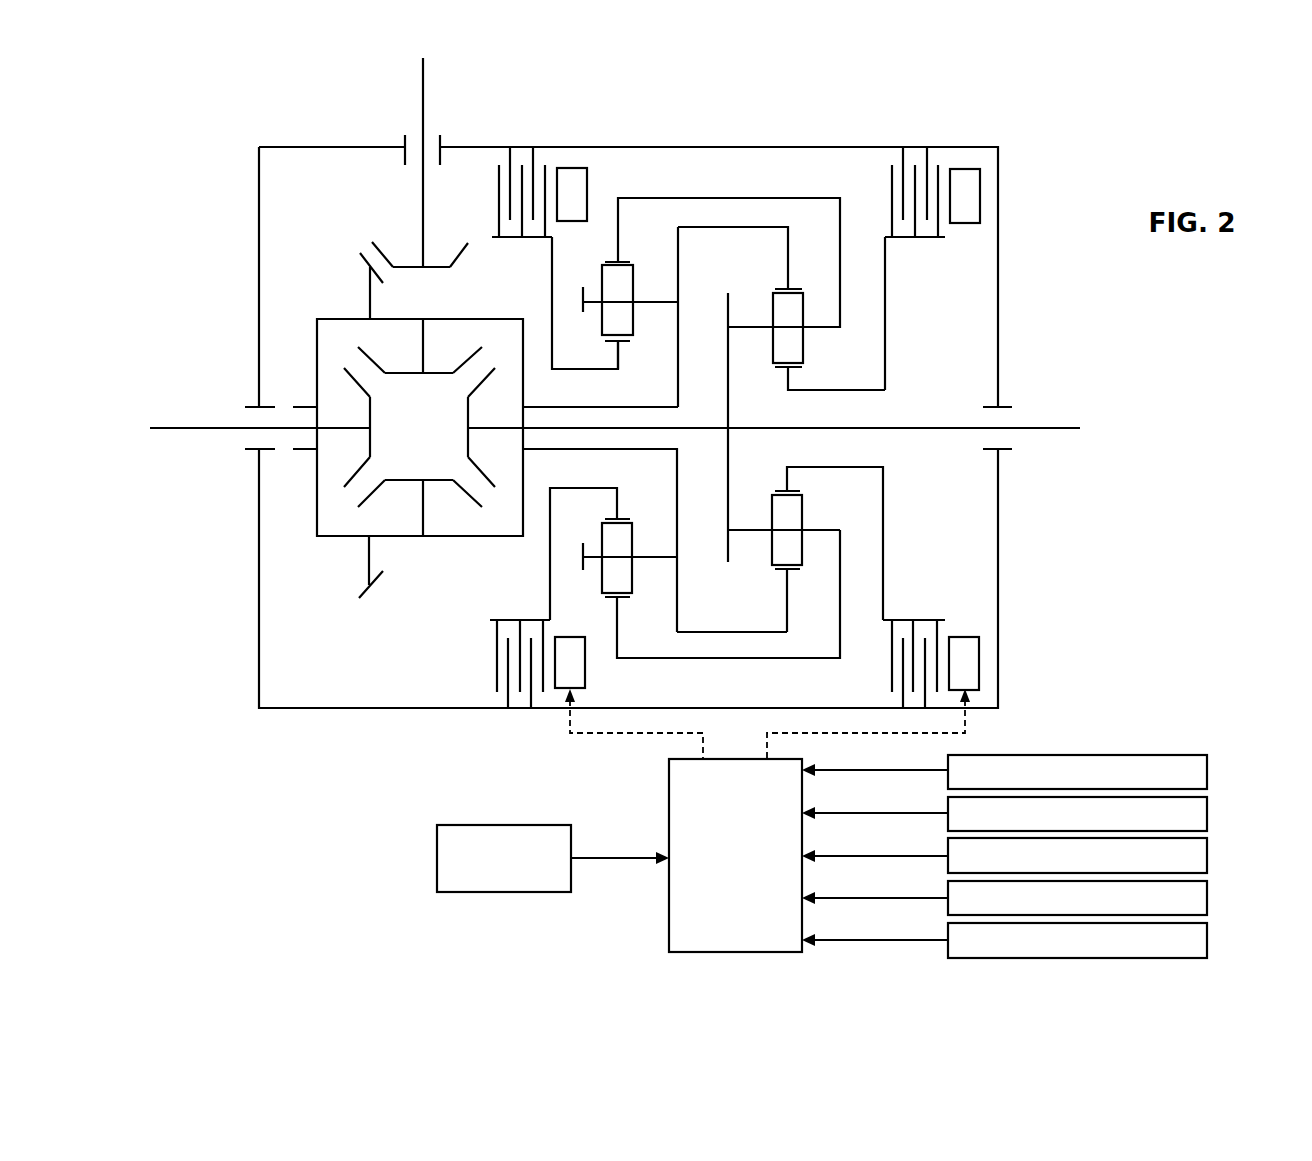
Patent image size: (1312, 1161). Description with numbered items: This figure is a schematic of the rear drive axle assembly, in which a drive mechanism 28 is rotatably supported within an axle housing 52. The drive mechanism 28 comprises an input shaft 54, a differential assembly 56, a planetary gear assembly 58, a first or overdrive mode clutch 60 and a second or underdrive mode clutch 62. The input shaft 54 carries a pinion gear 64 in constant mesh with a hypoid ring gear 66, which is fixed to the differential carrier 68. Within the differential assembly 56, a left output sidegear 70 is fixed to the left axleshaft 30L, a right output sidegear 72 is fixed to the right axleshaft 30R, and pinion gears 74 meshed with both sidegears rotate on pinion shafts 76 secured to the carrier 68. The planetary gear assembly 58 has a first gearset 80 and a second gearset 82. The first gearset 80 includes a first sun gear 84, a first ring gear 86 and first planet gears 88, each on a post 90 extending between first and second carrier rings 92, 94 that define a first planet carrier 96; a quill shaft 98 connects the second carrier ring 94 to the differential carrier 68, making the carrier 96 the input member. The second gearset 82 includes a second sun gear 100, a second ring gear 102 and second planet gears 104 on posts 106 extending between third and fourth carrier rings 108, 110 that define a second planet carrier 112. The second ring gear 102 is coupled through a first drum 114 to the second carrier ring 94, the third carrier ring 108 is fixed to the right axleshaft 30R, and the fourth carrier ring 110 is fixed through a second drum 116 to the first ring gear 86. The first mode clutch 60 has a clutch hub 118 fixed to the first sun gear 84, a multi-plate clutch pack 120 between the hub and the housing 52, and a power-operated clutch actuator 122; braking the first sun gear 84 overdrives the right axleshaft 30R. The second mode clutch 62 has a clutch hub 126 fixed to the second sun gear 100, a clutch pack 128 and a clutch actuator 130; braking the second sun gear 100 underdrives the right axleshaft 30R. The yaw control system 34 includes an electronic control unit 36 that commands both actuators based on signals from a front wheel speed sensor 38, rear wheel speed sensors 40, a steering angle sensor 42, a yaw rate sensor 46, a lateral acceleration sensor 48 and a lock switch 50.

The drive mechanism 28 is at (937, 118).
The left axleshaft 30L is at (186, 427).
The right axleshaft 30R is at (1040, 428).
The yaw control system 34 is at (622, 900).
The electronic control unit 36 is at (683, 790).
The front wheel speed sensor 38 is at (1207, 769).
The rear wheel speed sensor 40 is at (1207, 813).
The steering angle sensor 42 is at (1207, 857).
The yaw rate sensor 46 is at (1207, 899).
The lateral acceleration sensor 48 is at (1207, 943).
The lock switch 50 is at (448, 846).
The axle housing 52 is at (998, 268).
The input shaft 54 is at (424, 93).
The differential assembly 56 is at (419, 468).
The planetary gear assembly 58 is at (743, 180).
The first mode clutch 60 is at (571, 228).
The second mode clutch 62 is at (987, 153).
The pinion gear 64 is at (457, 257).
The hypoid ring gear 66 is at (362, 592).
The differential carrier 68 is at (337, 319).
The first output sidegear 70 is at (371, 408).
The second output sidegear 72 is at (466, 444).
The pinion gears 74 is at (462, 362).
The pinion shafts 76 is at (423, 338).
The first gearset 80 is at (640, 497).
The second gearset 82 is at (762, 564).
The first sun gear 84 is at (618, 350).
The first ring gear 86 is at (618, 227).
The first planet gears 88 is at (603, 283).
The post 90 is at (652, 302).
The first carrier ring 92 is at (583, 313).
The second carrier ring 94 is at (678, 318).
The first planet carrier 96 is at (673, 563).
The quill shaft 98 is at (575, 408).
The second sun gear 100 is at (789, 378).
The second ring gear 102 is at (787, 595).
The second planet gears 104 is at (797, 510).
The post 106 is at (748, 530).
The third carrier ring 108 is at (725, 388).
The fourth carrier ring 110 is at (883, 585).
The second planet carrier 112 is at (727, 531).
The first drum 114 is at (758, 227).
The second drum 116 is at (730, 632).
The clutch hub 118 is at (550, 573).
The multi-plate clutch pack 120 is at (499, 168).
The power-operated clutch actuator 122 is at (583, 183).
The clutch hub 126 is at (885, 295).
The clutch pack 128 is at (917, 187).
The power-operated clutch actuator 130 is at (973, 188).